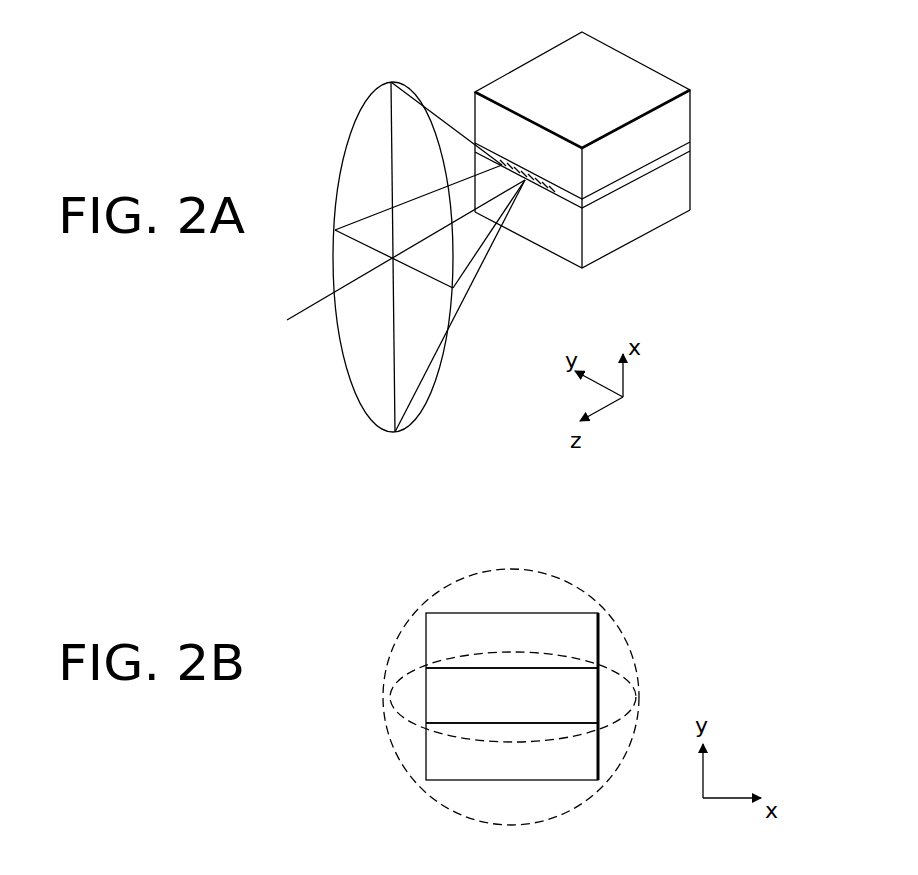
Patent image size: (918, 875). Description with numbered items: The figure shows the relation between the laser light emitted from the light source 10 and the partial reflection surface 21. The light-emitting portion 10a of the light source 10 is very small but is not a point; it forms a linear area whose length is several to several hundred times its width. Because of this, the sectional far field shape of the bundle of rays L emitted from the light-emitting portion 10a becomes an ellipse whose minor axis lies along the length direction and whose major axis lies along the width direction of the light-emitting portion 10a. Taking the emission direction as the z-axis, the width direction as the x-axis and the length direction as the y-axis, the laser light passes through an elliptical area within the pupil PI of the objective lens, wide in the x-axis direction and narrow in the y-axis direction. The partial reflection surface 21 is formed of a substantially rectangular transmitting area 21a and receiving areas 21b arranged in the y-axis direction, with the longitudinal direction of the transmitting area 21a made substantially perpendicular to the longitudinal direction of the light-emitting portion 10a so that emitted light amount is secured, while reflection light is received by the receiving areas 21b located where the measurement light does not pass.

In FIG. 2A, the light source 10 is at (657, 80).
In FIG. 2A, the light-emitting portion 10a is at (547, 173).
In FIG. 2A, the bundle of rays L is at (391, 82).
In FIG. 2B, the bundle of rays L is at (640, 664).
In FIG. 2B, the pupil PI is at (578, 585).
In FIG. 2B, the partial reflection surface 21 is at (458, 612).
In FIG. 2B, the transmitting area 21a is at (486, 712).
In FIG. 2B, the receiving areas 21b is at (486, 649).